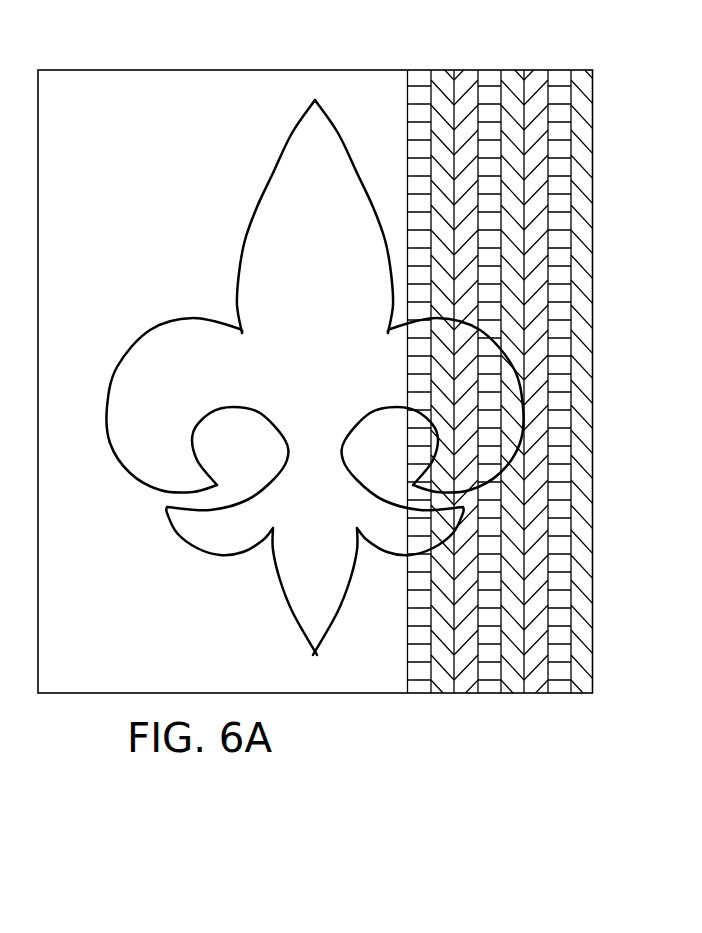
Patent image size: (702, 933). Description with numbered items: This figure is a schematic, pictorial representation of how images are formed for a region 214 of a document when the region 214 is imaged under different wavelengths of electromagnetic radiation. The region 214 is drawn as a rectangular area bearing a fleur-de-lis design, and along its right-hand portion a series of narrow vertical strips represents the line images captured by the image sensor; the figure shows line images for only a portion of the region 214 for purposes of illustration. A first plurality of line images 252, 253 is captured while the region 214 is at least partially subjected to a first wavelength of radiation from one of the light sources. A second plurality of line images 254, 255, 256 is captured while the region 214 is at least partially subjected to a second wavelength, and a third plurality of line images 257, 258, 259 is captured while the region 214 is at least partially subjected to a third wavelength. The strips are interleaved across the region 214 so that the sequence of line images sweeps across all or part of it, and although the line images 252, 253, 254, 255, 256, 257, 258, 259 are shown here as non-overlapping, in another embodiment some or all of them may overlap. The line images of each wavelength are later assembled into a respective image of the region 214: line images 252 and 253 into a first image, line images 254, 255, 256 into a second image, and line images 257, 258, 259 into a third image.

The region 214 is at (150, 67).
The line image 252 is at (465, 697).
The line image 253 is at (535, 697).
The line image 254 is at (420, 697).
The line image 255 is at (492, 697).
The line image 256 is at (558, 697).
The line image 257 is at (440, 697).
The line image 258 is at (507, 697).
The line image 259 is at (582, 697).